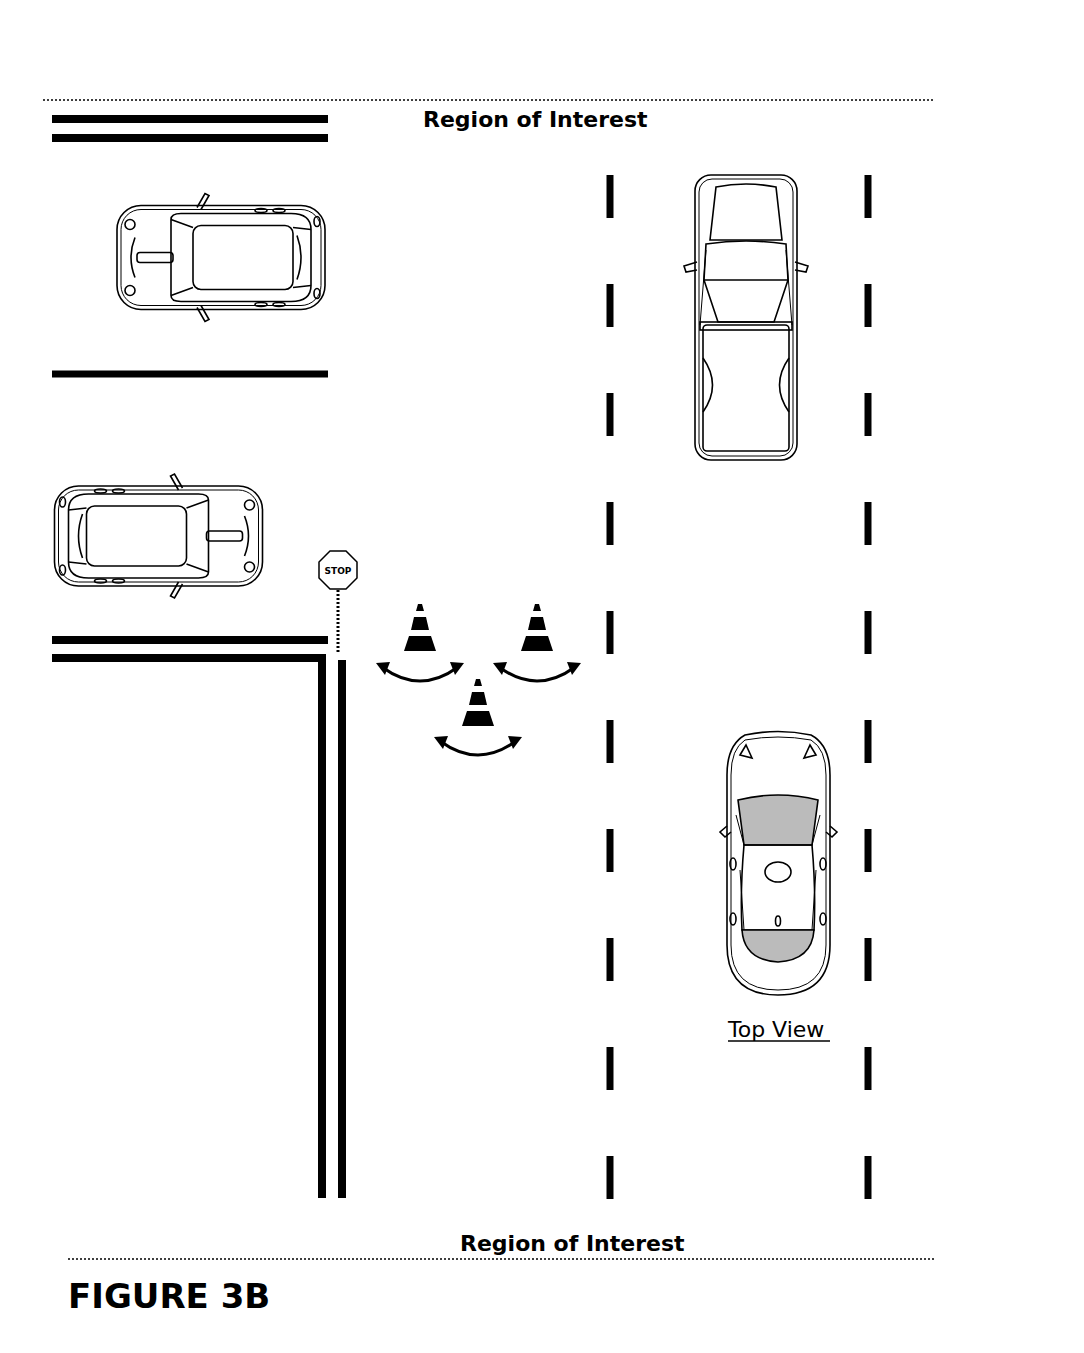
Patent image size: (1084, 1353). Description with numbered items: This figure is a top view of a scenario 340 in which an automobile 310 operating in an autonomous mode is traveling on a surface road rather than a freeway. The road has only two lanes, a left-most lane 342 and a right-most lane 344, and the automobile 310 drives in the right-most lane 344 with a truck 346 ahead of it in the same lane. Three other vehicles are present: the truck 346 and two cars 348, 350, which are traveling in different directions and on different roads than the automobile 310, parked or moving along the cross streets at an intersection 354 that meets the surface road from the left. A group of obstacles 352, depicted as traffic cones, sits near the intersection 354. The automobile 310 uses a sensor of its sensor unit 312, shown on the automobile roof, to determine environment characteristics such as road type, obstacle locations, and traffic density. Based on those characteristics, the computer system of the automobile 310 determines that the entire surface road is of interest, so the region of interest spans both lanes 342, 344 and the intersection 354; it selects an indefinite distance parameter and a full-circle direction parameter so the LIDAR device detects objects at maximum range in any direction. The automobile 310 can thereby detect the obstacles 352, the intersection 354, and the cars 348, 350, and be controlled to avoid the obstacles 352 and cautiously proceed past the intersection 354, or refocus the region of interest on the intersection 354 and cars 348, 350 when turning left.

The automobile 310 is at (728, 781).
The sensor unit 312 is at (766, 880).
The scenario 340 is at (247, 62).
The left-most lane 342 is at (468, 75).
The right-most lane 344 is at (733, 75).
The truck 346 is at (701, 170).
The car 348 is at (125, 296).
The car 350 is at (252, 504).
The obstacles 352 is at (538, 581).
The intersection 354 is at (306, 378).